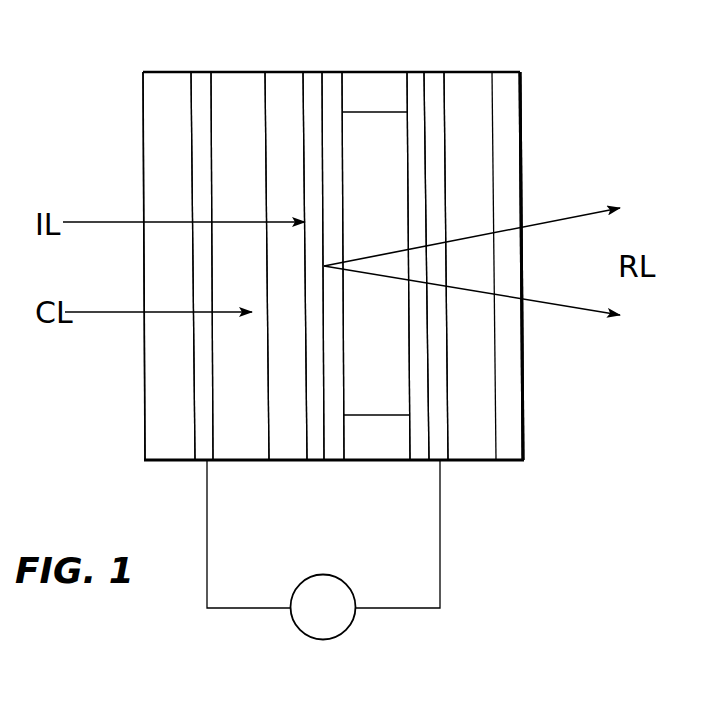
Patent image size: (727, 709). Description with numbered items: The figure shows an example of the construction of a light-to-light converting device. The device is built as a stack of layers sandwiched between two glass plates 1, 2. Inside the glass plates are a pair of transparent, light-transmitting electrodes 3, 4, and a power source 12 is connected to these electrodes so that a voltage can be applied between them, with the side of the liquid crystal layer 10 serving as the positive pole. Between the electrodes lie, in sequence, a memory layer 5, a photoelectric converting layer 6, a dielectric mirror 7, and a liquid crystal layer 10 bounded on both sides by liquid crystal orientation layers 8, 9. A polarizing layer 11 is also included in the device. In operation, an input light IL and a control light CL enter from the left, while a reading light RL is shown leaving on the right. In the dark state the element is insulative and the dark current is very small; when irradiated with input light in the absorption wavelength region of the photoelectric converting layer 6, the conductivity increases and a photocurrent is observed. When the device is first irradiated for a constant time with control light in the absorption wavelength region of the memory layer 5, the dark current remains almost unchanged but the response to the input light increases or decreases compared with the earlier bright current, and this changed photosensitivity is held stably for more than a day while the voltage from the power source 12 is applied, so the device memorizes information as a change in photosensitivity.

The glass plate 1 is at (162, 80).
The glass plate 2 is at (470, 73).
The transparent electrode 3 is at (198, 77).
The transparent electrode 4 is at (437, 73).
The memory layer 5 is at (245, 78).
The photoelectric converting layer 6 is at (287, 455).
The dielectric mirror 7 is at (315, 453).
The liquid crystal orientation layer 8 is at (333, 73).
The liquid crystal orientation layer 9 is at (418, 73).
The liquid crystal layer 10 is at (375, 410).
The polarizing layer 11 is at (516, 434).
The power source 12 is at (342, 622).